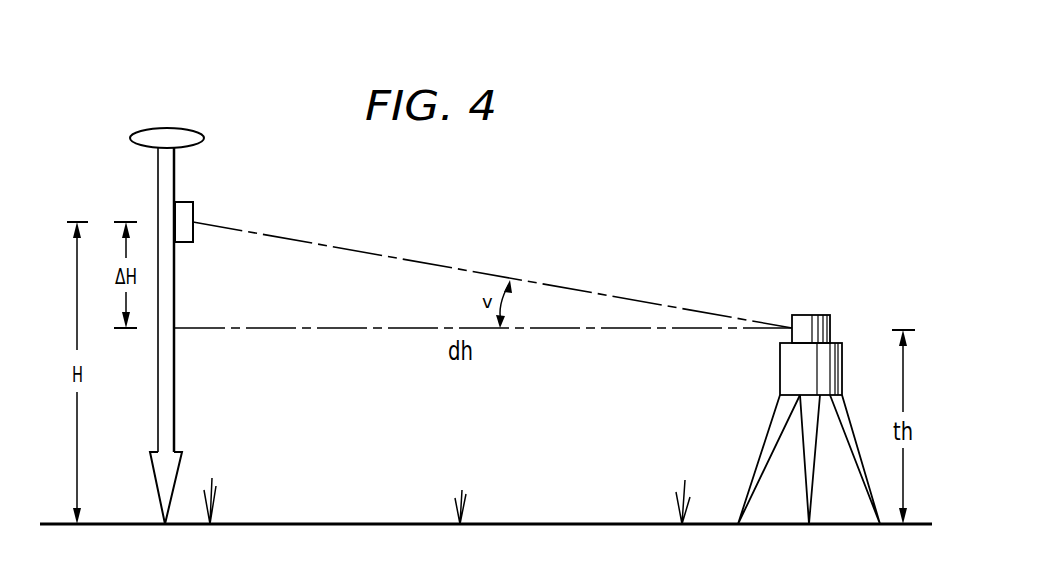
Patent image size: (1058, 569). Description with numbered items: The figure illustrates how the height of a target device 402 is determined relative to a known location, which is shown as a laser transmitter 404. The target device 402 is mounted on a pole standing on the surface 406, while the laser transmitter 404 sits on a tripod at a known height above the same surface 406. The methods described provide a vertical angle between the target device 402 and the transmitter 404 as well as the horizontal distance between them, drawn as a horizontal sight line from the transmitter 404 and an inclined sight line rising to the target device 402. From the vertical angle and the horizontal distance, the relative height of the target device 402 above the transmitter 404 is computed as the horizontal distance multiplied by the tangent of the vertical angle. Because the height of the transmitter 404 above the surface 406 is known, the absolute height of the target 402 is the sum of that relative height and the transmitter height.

The target device 402 is at (192, 200).
The laser transmitter 404 is at (813, 315).
The surface 406 is at (308, 524).